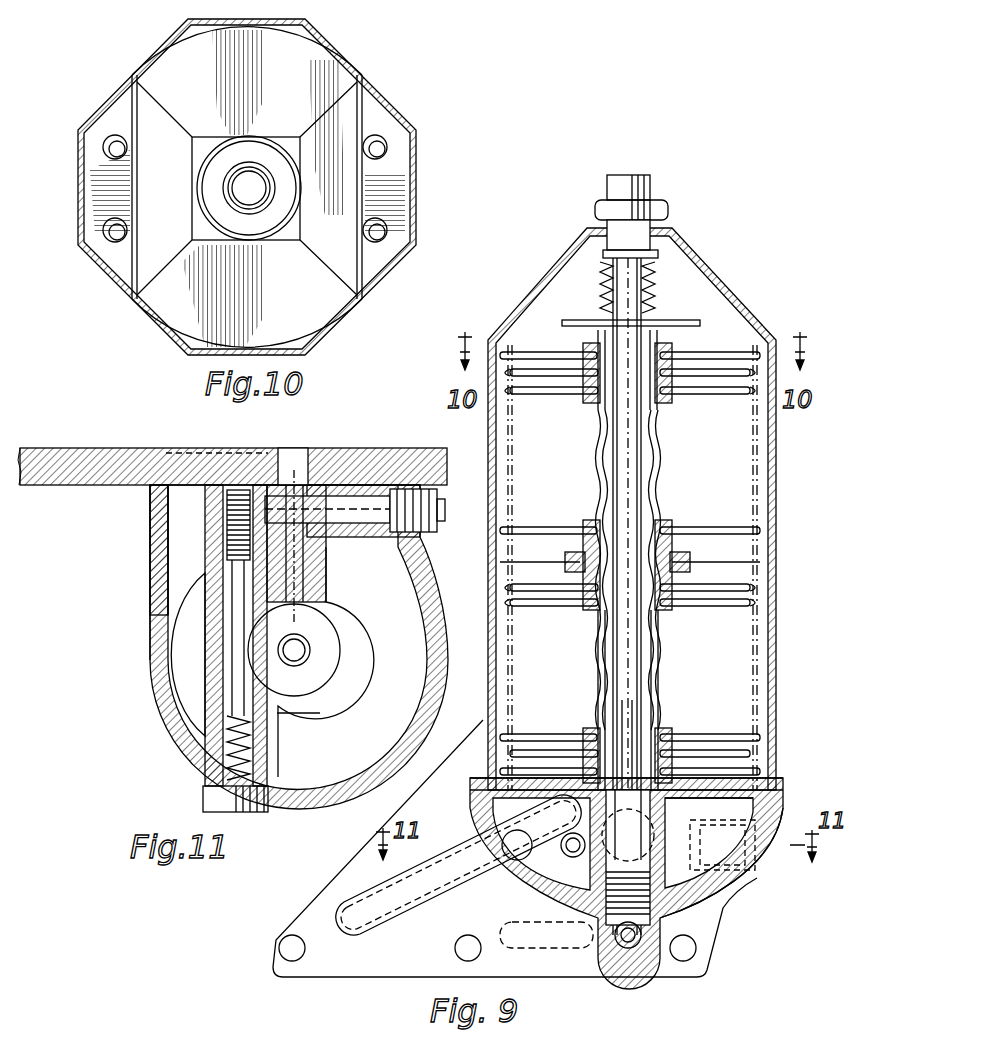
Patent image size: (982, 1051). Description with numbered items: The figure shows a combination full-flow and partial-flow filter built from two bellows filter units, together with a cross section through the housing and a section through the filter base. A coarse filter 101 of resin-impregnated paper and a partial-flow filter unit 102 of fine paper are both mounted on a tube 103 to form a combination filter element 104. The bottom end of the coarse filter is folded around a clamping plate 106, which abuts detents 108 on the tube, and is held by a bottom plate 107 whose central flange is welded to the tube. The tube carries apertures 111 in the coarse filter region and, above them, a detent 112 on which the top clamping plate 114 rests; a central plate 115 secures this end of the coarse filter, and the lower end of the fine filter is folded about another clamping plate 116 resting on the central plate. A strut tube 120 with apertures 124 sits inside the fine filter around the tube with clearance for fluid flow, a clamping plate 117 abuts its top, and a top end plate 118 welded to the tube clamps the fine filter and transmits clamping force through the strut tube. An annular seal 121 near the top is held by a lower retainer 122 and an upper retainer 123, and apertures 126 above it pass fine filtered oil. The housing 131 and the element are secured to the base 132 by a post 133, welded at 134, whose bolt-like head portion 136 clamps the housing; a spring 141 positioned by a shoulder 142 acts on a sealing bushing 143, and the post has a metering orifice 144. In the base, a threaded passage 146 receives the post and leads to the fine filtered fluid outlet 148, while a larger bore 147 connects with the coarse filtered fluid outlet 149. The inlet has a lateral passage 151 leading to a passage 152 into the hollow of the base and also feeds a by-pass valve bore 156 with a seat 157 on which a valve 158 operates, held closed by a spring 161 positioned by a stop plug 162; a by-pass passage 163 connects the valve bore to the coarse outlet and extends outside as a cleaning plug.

In FIG. 9, the coarse filter 101 is at (692, 604).
In FIG. 10, the partial-flow filter unit 102 is at (380, 118).
In FIG. 9, the partial-flow filter unit 102 is at (716, 400).
In FIG. 10, the tube 103 is at (250, 240).
In FIG. 9, the tube 103 is at (670, 650).
In FIG. 9, the combination filter element 104 is at (765, 540).
In FIG. 9, the clamping plate 106 is at (576, 738).
In FIG. 9, the bottom plate 107 is at (776, 774).
In FIG. 9, the detents 108 is at (672, 736).
In FIG. 9, the apertures 111 is at (600, 690).
In FIG. 9, the detent 112 is at (560, 588).
In FIG. 9, the top clamping plate 114 is at (638, 594).
In FIG. 9, the central plate 115 is at (760, 562).
In FIG. 9, the clamping plate 116 is at (668, 552).
In FIG. 10, the clamping plate 117 is at (180, 310).
In FIG. 9, the clamping plate 117 is at (745, 355).
In FIG. 9, the top end plate 118 is at (510, 345).
In FIG. 9, the strut tube 120 is at (660, 474).
In FIG. 9, the annular seal 121 is at (590, 408).
In FIG. 9, the lower retainer 122 is at (597, 440).
In FIG. 10, the upper retainer 123 is at (270, 205).
In FIG. 9, the upper retainer 123 is at (578, 394).
In FIG. 9, the apertures 124 is at (592, 500).
In FIG. 9, the apertures 126 is at (668, 352).
In FIG. 9, the housing 131 is at (705, 262).
In FIG. 11, the base 132 is at (153, 674).
In FIG. 9, the base 132 is at (760, 865).
In FIG. 10, the post 133 is at (226, 194).
In FIG. 11, the post 133 is at (310, 652).
In FIG. 9, the post 133 is at (650, 700).
In FIG. 9, the weld 134 is at (600, 290).
In FIG. 9, the head portion 136 is at (652, 184).
In FIG. 9, the spring 141 is at (643, 300).
In FIG. 9, the shoulder 142 is at (612, 225).
In FIG. 9, the sealing bushing 143 is at (682, 320).
In FIG. 9, the metering orifice 144 is at (590, 355).
In FIG. 9, the threaded passage 146 is at (636, 950).
In FIG. 11, the bore 147 is at (318, 668).
In FIG. 9, the bore 147 is at (665, 805).
In FIG. 11, the fine filtered fluid outlet 148 is at (302, 591).
In FIG. 9, the fine filtered fluid outlet 148 is at (620, 950).
In FIG. 11, the coarse filtered fluid outlet 149 is at (308, 482).
In FIG. 9, the coarse filtered fluid outlet 149 is at (712, 843).
In FIG. 11, the lateral passage 151 is at (84, 474).
In FIG. 9, the lateral passage 151 is at (394, 912).
In FIG. 11, the passage 152 is at (174, 550).
In FIG. 9, the passage 152 is at (560, 830).
In FIG. 11, the by-pass valve bore 156 is at (217, 608).
In FIG. 9, the by-pass valve bore 156 is at (575, 860).
In FIG. 11, the seat 157 is at (214, 490).
In FIG. 11, the valve 158 is at (241, 490).
In FIG. 11, the spring 161 is at (225, 777).
In FIG. 9, the spring 161 is at (575, 858).
In FIG. 11, the stop plug 162 is at (222, 803).
In FIG. 11, the by-pass passage 163 is at (295, 468).
In FIG. 9, the by-pass passage 163 is at (632, 812).